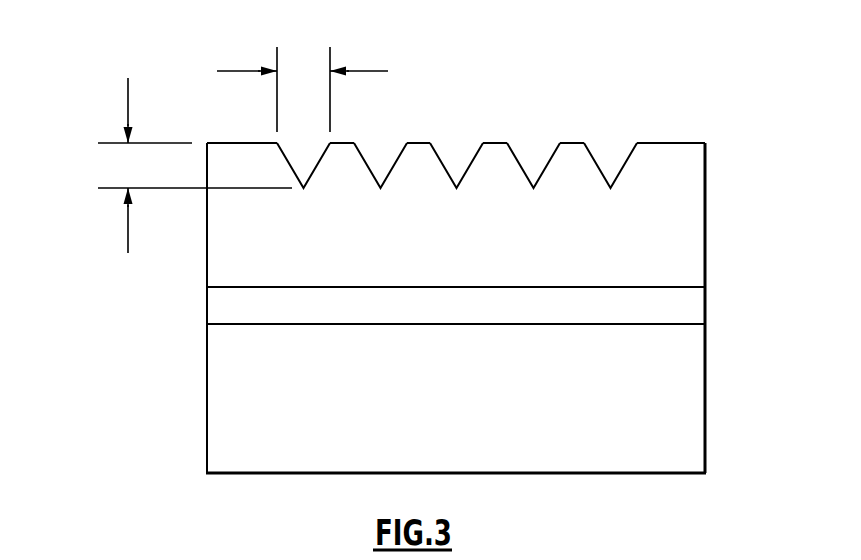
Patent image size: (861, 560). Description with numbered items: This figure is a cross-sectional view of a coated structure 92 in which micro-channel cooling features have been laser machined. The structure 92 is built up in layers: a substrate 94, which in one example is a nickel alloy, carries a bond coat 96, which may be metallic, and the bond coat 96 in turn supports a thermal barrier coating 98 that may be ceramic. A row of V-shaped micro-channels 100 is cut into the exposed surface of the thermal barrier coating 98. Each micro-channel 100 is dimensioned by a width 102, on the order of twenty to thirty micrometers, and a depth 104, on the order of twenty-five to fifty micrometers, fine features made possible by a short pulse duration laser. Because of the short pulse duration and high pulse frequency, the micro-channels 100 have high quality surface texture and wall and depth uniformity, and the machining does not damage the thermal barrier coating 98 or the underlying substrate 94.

The structure 92 is at (715, 143).
The substrate 94 is at (562, 397).
The bond coat 96 is at (467, 313).
The thermal barrier coating 98 is at (562, 242).
The micro-channels 100 is at (366, 181).
The width 102 is at (303, 71).
The depth 104 is at (128, 166).